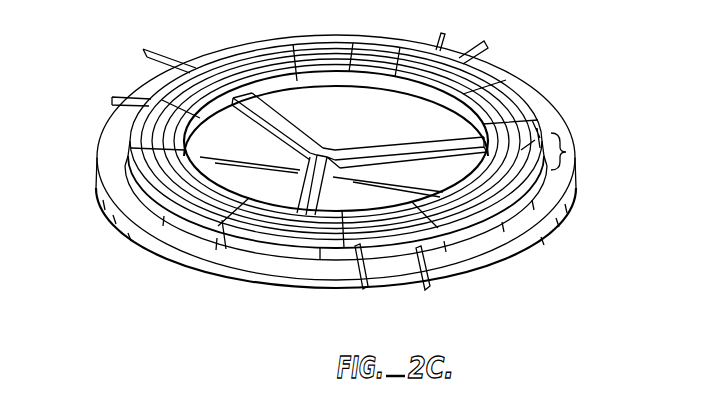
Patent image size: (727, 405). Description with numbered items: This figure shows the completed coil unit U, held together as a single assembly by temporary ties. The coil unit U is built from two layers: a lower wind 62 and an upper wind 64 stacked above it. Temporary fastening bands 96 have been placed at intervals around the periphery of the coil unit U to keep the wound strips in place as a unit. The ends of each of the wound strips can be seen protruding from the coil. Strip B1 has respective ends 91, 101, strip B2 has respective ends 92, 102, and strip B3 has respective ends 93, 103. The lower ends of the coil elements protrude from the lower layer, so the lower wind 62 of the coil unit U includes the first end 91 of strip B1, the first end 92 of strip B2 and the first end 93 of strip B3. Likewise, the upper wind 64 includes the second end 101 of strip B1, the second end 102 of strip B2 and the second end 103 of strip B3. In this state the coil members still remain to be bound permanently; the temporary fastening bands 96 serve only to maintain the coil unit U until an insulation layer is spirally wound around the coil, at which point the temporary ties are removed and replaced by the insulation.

The lower wind 62 is at (528, 230).
The upper wind 64 is at (508, 83).
The temporary fastening band 96 is at (299, 45).
The first end of strip B3 93 is at (143, 49).
The second end of strip B3 103 is at (112, 100).
The first end of strip B2 92 is at (437, 35).
The second end of strip B2 102 is at (488, 48).
The first end of strip B1 91 is at (428, 288).
The second end of strip B1 101 is at (369, 288).
The strip B1 is at (468, 242).
The strip B2 is at (452, 34).
The strip B3 is at (152, 66).
The coil unit U is at (567, 152).